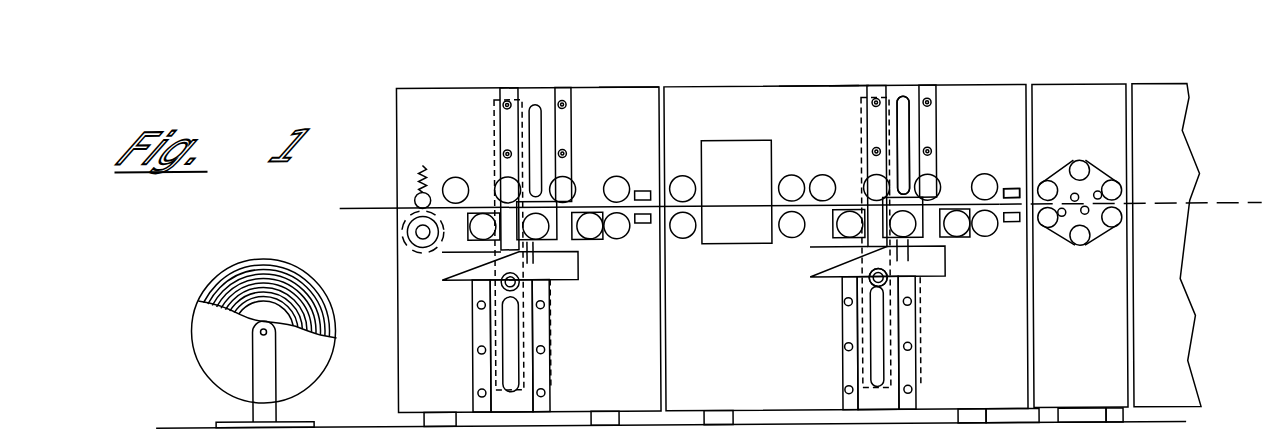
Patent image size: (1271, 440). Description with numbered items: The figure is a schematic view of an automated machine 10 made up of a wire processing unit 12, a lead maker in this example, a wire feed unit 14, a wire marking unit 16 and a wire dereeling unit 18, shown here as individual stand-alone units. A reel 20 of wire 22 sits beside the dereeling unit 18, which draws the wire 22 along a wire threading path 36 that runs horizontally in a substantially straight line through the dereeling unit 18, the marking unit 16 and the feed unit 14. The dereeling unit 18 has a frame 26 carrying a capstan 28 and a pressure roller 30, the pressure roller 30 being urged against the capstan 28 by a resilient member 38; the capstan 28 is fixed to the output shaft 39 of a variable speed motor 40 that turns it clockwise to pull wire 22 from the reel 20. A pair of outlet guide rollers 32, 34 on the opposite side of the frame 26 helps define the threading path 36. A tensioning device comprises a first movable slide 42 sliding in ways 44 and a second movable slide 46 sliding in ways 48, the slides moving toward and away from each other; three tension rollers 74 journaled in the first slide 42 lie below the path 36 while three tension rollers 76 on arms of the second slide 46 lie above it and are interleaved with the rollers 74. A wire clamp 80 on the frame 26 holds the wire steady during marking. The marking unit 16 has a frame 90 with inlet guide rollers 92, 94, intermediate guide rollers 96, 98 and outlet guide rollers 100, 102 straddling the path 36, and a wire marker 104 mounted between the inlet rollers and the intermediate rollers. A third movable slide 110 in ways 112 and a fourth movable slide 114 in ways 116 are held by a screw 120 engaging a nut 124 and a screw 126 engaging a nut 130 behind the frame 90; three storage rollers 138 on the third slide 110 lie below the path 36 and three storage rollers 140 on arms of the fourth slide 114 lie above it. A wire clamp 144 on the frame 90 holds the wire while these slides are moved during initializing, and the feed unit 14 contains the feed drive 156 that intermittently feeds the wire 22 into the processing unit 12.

The automated machine 10 is at (851, 68).
The wire processing unit 12 is at (1146, 70).
The wire feed unit 14 is at (1083, 70).
The wire marking unit 16 is at (731, 70).
The wire dereeling unit 18 is at (456, 72).
The reel 20 is at (202, 330).
The wire 22 is at (245, 270).
The frame 26 is at (637, 85).
The capstan 28 is at (410, 240).
The pressure roller 30 is at (416, 193).
The outlet guide roller 32 is at (623, 177).
The outlet guide roller 34 is at (620, 235).
The wire threading path 36 is at (348, 205).
The resilient member 38 is at (425, 160).
The output shaft 39 is at (416, 227).
The variable speed motor 40 is at (408, 250).
The first movable slide 42 is at (541, 196).
The ways 44 is at (508, 85).
The second movable slide 46 is at (577, 263).
The ways 48 is at (475, 330).
The tension rollers 74 is at (590, 212).
The tension rollers 76 is at (498, 180).
The wire clamp 80 is at (646, 188).
The frame 90 is at (814, 85).
The inlet guide roller 92 is at (684, 176).
The inlet guide roller 94 is at (684, 237).
The intermediate guide roller 96 is at (791, 176).
The intermediate guide roller 98 is at (791, 237).
The outlet guide roller 100 is at (1012, 189).
The outlet guide roller 102 is at (989, 236).
The wire marker 104 is at (728, 140).
The third movable slide 110 is at (912, 194).
The ways 112 is at (877, 86).
The fourth movable slide 114 is at (933, 278).
The ways 116 is at (842, 370).
The screw 120 is at (899, 192).
The nut 124 is at (903, 145).
The screw 126 is at (872, 281).
The nut 130 is at (878, 277).
The storage rollers 138 is at (913, 219).
The storage rollers 140 is at (866, 185).
The wire clamp 144 is at (1012, 190).
The feed drive 156 is at (1086, 167).